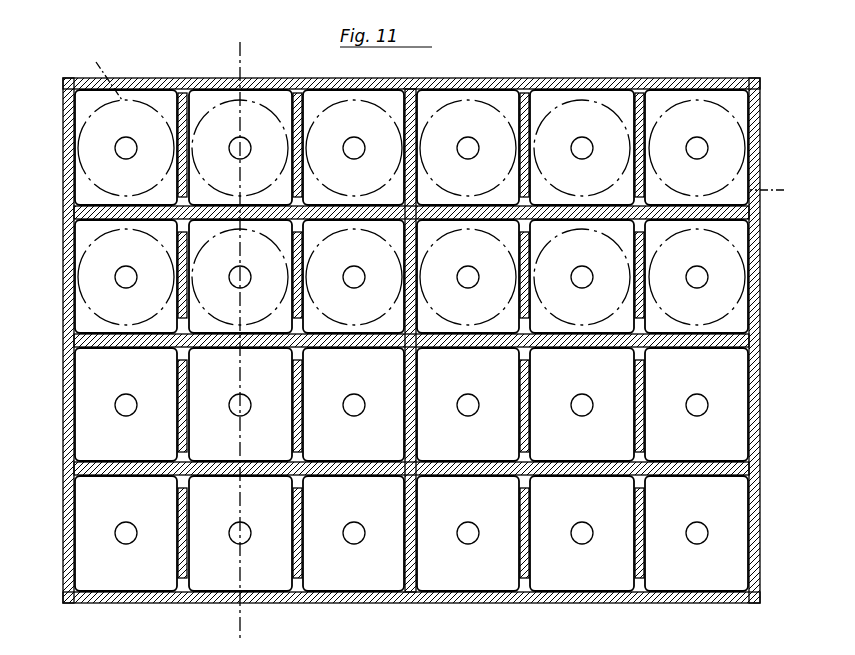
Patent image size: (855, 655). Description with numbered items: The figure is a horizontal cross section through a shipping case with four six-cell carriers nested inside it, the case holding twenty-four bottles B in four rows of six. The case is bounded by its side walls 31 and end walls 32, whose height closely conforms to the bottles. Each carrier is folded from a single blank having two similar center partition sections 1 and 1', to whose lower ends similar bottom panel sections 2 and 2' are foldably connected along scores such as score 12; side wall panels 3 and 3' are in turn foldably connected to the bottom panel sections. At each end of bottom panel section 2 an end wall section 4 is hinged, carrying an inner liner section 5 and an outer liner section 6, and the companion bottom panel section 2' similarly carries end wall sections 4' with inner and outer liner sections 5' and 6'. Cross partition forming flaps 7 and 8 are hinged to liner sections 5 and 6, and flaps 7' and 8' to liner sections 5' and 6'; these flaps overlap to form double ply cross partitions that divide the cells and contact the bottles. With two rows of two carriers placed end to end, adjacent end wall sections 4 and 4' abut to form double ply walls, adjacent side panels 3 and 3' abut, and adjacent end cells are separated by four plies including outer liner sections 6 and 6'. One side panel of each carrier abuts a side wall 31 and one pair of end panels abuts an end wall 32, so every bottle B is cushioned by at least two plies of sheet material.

The center partition section 1 is at (401, 386).
The center partition section 1' is at (398, 299).
The bottom panel section 2 is at (407, 405).
The bottom panel section 2' is at (406, 275).
The side wall panel 3 is at (411, 449).
The side wall panel 3' is at (411, 261).
The end wall section 4 is at (411, 340).
The end wall section 4' is at (411, 321).
The inner liner section 5 is at (411, 252).
The inner liner section 5' is at (411, 152).
The outer liner section 6 is at (411, 305).
The outer liner section 6' is at (411, 146).
The cross partition forming flap 7 is at (411, 283).
The cross partition forming flap 7' is at (411, 146).
The cross partition forming flap 8 is at (409, 277).
The cross partition forming flap 8' is at (408, 148).
The score 12 is at (230, 50).
The side wall 31 is at (478, 79).
The end wall 32 is at (72, 392).
The bottle B is at (438, 125).